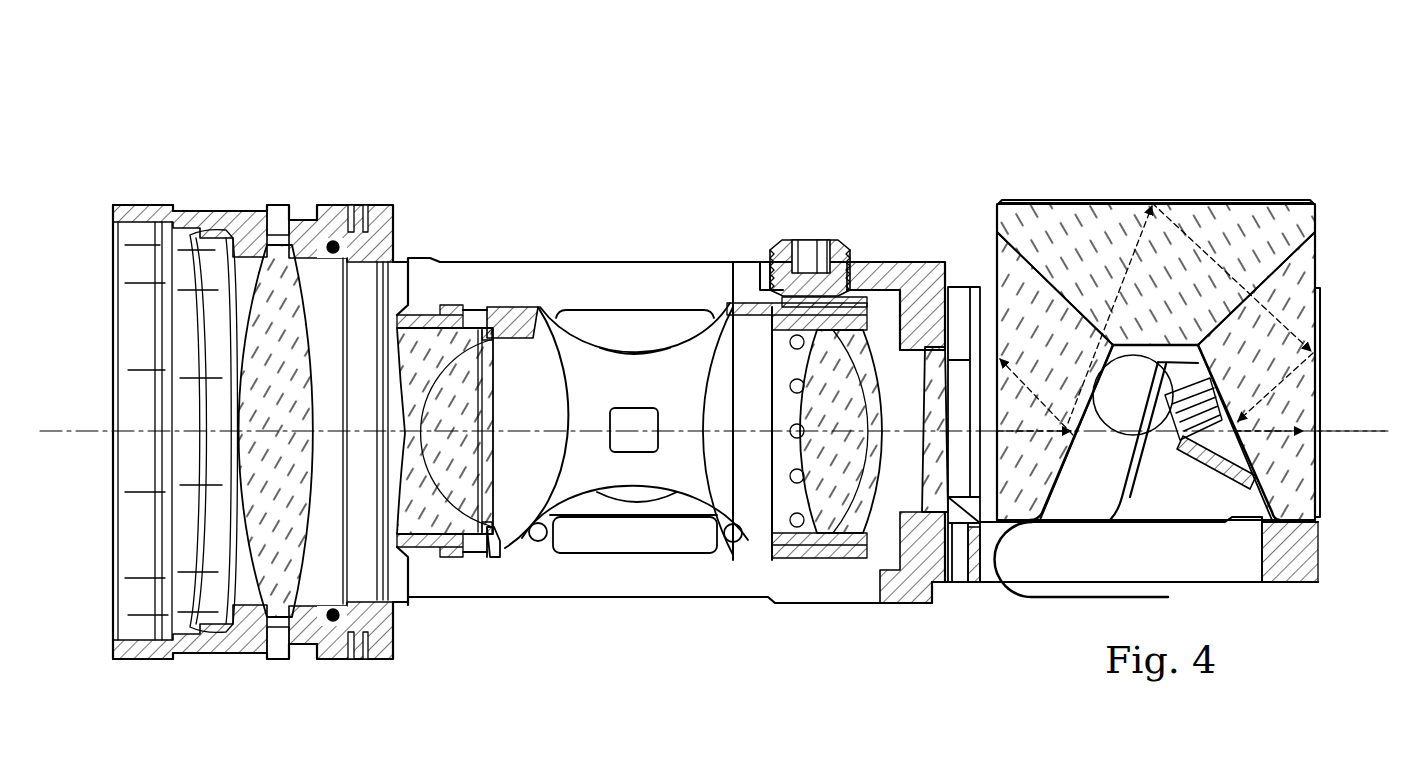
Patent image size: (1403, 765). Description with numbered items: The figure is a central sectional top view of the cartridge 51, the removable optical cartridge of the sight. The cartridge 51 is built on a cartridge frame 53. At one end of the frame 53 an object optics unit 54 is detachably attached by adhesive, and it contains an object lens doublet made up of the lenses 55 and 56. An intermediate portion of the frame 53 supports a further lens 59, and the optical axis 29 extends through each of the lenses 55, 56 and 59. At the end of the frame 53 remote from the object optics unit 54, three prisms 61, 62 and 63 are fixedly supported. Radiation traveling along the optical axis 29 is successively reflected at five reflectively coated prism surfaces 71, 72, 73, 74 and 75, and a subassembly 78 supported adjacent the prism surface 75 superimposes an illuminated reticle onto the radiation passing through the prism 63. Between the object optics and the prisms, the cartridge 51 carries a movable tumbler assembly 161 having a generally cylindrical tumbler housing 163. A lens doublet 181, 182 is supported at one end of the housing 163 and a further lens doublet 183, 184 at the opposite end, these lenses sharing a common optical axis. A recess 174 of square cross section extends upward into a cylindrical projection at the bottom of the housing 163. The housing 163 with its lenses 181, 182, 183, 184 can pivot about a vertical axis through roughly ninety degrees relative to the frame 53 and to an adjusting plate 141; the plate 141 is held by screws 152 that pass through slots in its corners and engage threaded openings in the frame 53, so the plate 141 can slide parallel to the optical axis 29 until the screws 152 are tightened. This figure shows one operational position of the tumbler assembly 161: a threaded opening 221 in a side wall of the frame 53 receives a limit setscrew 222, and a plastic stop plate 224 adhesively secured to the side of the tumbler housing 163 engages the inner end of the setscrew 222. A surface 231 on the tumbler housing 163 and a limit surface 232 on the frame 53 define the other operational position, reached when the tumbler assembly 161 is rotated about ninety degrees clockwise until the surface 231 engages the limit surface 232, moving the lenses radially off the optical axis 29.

The cartridge 51 is at (915, 90).
The cartridge frame 53 is at (905, 604).
The object optics unit 54 is at (205, 212).
The object lens 55 is at (263, 397).
The object lens 56 is at (300, 222).
The further lens 59 is at (950, 298).
The prism 61 is at (1052, 450).
The prism 62 is at (1067, 207).
The prism 63 is at (1310, 472).
The prism surface 71 is at (1050, 517).
The prism surface 72 is at (997, 300).
The prism surface 73 is at (1238, 207).
The prism surface 74 is at (1320, 282).
The prism surface 75 is at (1238, 500).
The subassembly 78 is at (1207, 480).
The optical axis 29 is at (1348, 426).
The adjusting plate 141 is at (660, 546).
The screws 152 is at (539, 543).
The tumbler assembly 161 is at (509, 558).
The tumbler housing 163 is at (720, 311).
The recess 174 is at (618, 418).
The lens 181 is at (445, 330).
The lens 182 is at (484, 405).
The lens 183 is at (800, 458).
The lens 184 is at (845, 558).
The threaded opening 221 is at (835, 247).
The limit setscrew 222 is at (792, 247).
The stop plate 224 is at (842, 298).
The surface 231 is at (515, 307).
The limit surface 232 is at (757, 270).